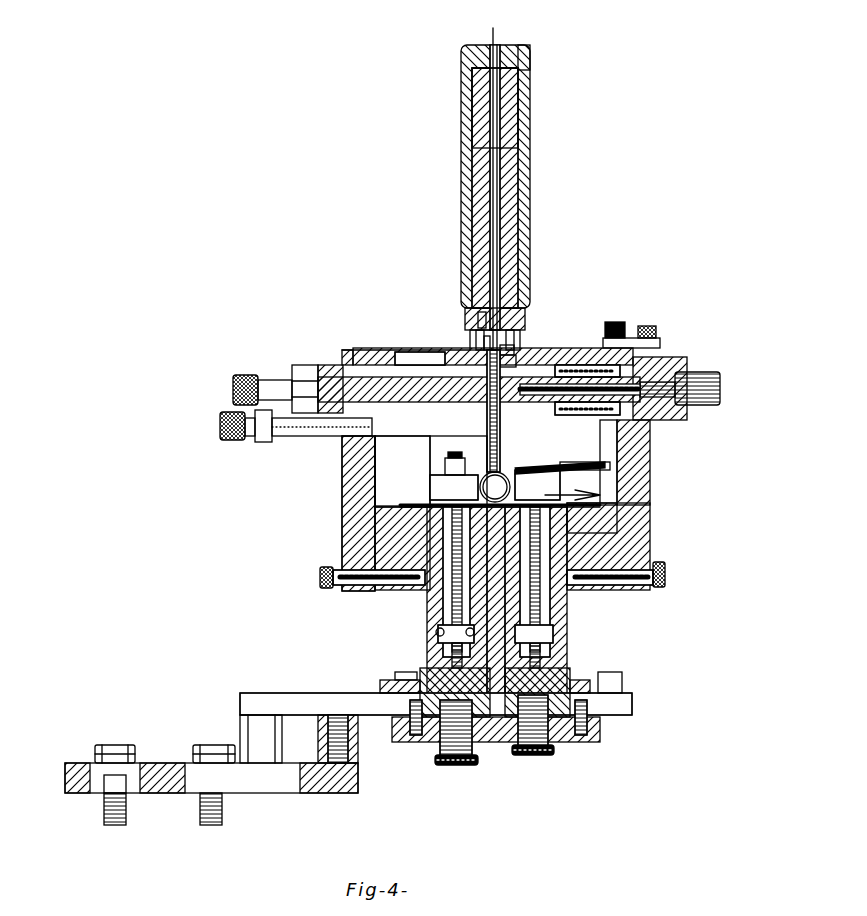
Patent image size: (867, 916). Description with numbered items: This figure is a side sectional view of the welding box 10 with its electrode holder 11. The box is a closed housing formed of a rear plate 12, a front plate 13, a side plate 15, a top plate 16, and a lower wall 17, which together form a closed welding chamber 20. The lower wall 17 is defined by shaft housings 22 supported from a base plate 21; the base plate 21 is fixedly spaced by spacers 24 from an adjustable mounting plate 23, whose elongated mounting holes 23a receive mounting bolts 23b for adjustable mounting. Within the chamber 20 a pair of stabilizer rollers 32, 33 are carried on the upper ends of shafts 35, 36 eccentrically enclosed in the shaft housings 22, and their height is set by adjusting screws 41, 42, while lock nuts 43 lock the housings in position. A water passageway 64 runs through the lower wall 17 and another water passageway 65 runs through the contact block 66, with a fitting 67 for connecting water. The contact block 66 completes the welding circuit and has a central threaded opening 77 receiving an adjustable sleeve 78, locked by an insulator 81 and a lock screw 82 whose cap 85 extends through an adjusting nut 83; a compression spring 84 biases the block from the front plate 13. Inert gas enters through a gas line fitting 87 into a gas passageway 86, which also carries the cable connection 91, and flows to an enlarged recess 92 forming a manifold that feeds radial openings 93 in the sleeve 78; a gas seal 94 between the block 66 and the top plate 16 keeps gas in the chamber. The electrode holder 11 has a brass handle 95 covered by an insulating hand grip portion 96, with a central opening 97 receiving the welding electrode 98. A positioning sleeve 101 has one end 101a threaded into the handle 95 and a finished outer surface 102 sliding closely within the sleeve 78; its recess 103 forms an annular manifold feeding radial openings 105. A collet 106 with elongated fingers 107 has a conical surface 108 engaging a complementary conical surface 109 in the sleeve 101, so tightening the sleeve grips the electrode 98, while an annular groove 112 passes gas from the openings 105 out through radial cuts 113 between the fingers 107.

The welding box 10 is at (218, 615).
The electrode holder 11 is at (455, 126).
The rear plate 12 is at (345, 518).
The front plate 13 is at (645, 530).
The side plate 15 is at (350, 470).
The top plate 16 is at (372, 350).
The lower wall 17 is at (345, 555).
The welding chamber 20 is at (418, 457).
The base plate 21 is at (262, 700).
The shaft housings 22 is at (432, 612).
The mounting plate 23 is at (75, 765).
The mounting holes 23a is at (100, 793).
The mounting bolts 23b is at (205, 810).
The spacers 24 is at (242, 735).
The stabilizer roller 32 is at (645, 505).
The stabilizer roller 33 is at (356, 496).
The shaft 35 is at (555, 600).
The shaft 36 is at (432, 640).
The adjusting screw 41 is at (535, 757).
The adjusting screw 42 is at (455, 765).
The lock nuts 43 is at (320, 578).
The water passageway 64 is at (382, 583).
The water passageway 65 is at (592, 470).
The contact block 66 is at (345, 430).
The fitting 67 is at (225, 432).
The threaded opening 77 is at (520, 352).
The adjustable sleeve 78 is at (525, 360).
The insulator 81 is at (650, 450).
The lock screw 82 is at (648, 425).
The adjusting nut 83 is at (680, 405).
The compression spring 84 is at (580, 412).
The cap 85 is at (715, 390).
The gas passageway 86 is at (325, 366).
The gas line fitting 87 is at (228, 386).
The cable connection 91 is at (300, 370).
The enlarged recess 92 is at (610, 345).
The radial openings 93 is at (575, 495).
The gas seal 94 is at (470, 348).
The handle 95 is at (508, 112).
The hand grip portion 96 is at (526, 62).
The central opening 97 is at (488, 45).
The welding electrode 98 is at (490, 30).
The positioning sleeve 101 is at (512, 320).
The end of positioning sleeve 101a is at (520, 342).
The finished outer surface 102 is at (478, 340).
The recess 103 is at (480, 345).
The radial openings 105 is at (496, 397).
The collet 106 is at (480, 315).
The fingers 107 is at (515, 348).
The conical surface 108 is at (492, 420).
The conical surface 109 is at (542, 482).
The annular groove 112 is at (405, 352).
The radial cuts 113 is at (445, 476).